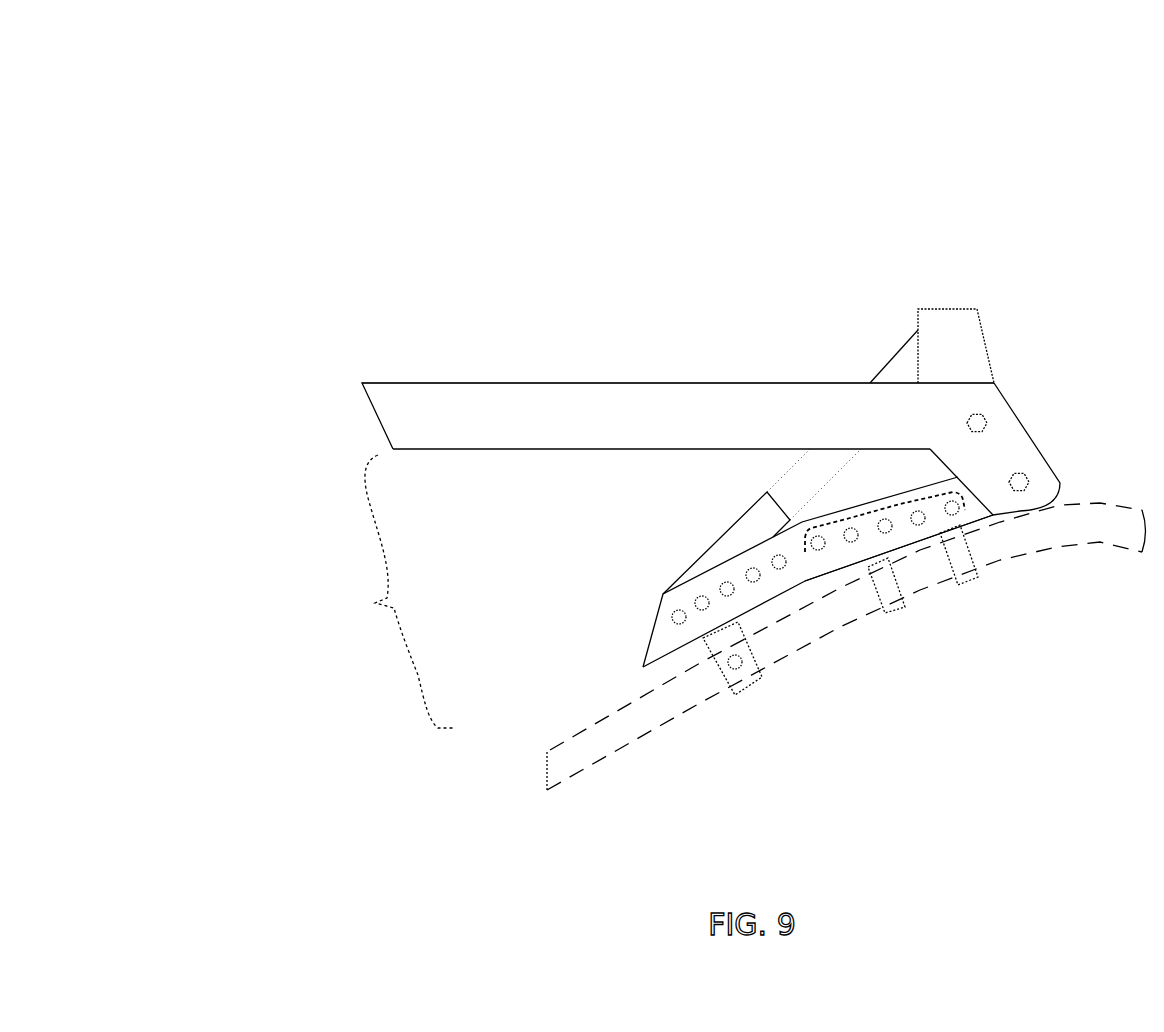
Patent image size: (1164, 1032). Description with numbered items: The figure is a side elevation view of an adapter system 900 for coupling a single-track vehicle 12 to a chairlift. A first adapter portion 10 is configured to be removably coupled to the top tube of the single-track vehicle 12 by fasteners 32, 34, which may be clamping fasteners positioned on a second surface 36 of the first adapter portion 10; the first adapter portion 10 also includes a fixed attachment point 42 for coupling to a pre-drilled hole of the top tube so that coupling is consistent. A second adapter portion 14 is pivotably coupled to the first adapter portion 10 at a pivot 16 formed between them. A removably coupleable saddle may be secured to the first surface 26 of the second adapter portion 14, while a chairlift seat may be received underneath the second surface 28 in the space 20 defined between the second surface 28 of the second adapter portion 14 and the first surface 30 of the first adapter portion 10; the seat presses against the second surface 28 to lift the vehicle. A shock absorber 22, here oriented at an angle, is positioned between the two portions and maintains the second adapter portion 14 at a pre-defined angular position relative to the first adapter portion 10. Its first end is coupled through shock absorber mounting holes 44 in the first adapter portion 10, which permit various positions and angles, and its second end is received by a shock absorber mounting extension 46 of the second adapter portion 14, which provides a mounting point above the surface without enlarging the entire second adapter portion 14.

The aircraft structure assembly view 900 is at (161, 34).
The first adapter portion 10 is at (642, 670).
The single-track vehicle 12 is at (568, 724).
The second adapter portion 14 is at (1002, 392).
The pivot 16 is at (1053, 438).
The space 20 is at (388, 591).
The shock absorber 22 is at (710, 547).
The first surface 26 is at (632, 358).
The second surface 28 is at (623, 477).
The first surface 30 is at (832, 258).
The fastener 32 is at (893, 613).
The fastener 34 is at (968, 587).
The second surface 36 is at (810, 588).
The fixed attachment point 42 is at (903, 503).
The shock absorber mounting holes 44 is at (747, 692).
The shock absorber mounting extension 46 is at (952, 308).